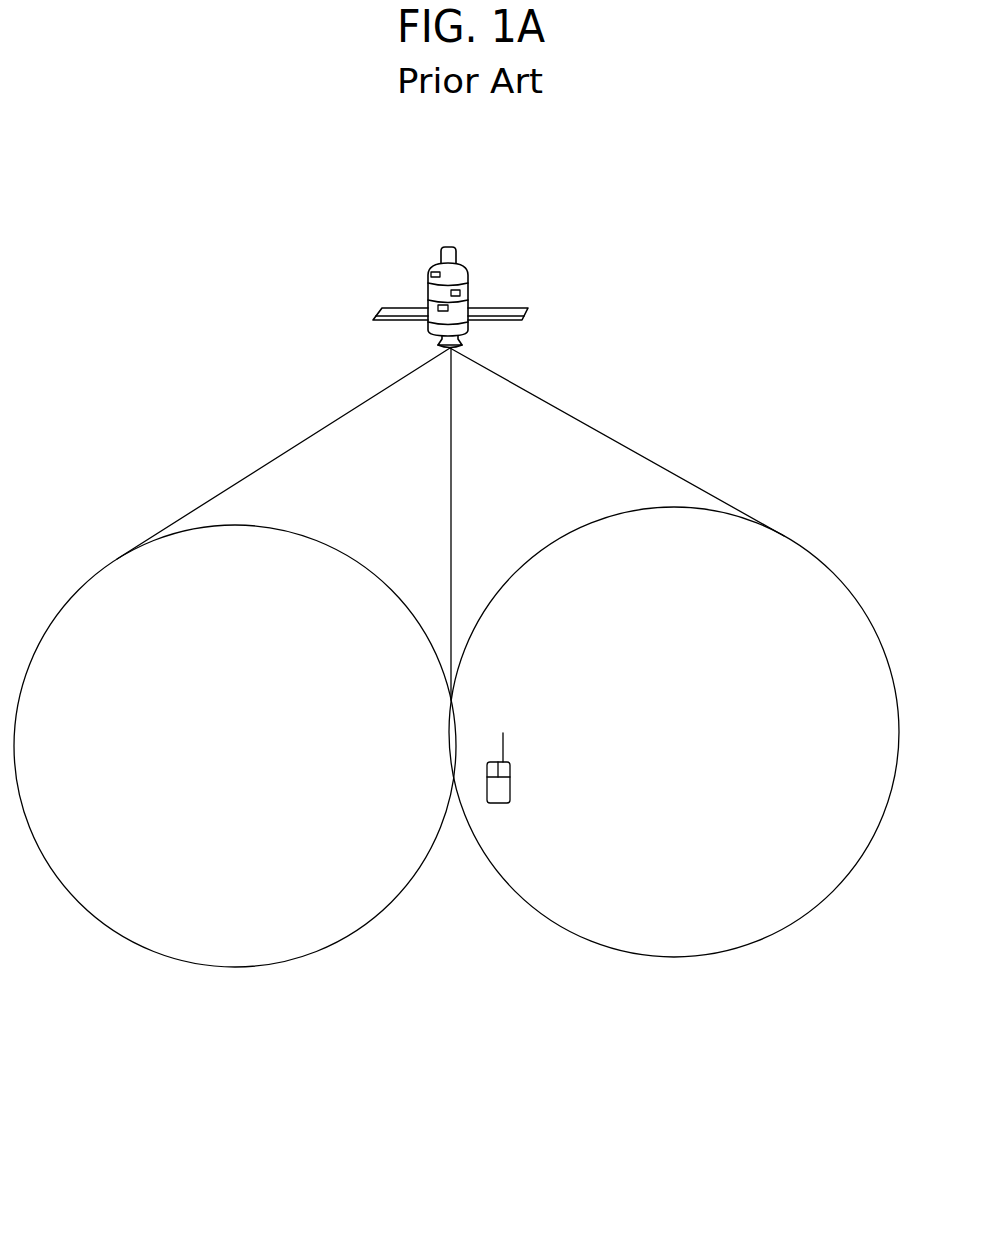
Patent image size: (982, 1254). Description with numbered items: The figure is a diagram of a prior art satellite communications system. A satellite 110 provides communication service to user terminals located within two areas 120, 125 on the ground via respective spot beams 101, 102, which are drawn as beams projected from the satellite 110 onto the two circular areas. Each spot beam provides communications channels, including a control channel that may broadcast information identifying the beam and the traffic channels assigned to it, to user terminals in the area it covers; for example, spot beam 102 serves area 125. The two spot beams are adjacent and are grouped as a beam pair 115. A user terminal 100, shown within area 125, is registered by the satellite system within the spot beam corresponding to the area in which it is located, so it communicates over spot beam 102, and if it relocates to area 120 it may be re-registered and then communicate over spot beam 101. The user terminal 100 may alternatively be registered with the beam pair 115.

The user terminal 100 is at (509, 763).
The spot beam 101 is at (265, 467).
The spot beam 102 is at (655, 463).
The satellite 110 is at (460, 263).
The beam pair 115 is at (456, 727).
The area 120 is at (265, 757).
The area 125 is at (674, 732).